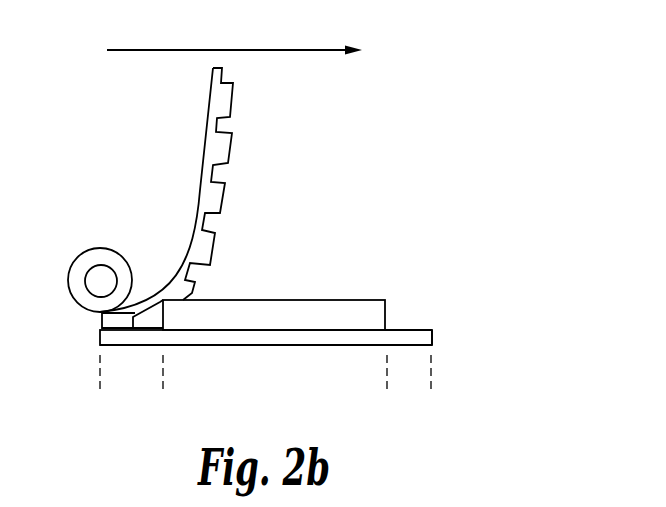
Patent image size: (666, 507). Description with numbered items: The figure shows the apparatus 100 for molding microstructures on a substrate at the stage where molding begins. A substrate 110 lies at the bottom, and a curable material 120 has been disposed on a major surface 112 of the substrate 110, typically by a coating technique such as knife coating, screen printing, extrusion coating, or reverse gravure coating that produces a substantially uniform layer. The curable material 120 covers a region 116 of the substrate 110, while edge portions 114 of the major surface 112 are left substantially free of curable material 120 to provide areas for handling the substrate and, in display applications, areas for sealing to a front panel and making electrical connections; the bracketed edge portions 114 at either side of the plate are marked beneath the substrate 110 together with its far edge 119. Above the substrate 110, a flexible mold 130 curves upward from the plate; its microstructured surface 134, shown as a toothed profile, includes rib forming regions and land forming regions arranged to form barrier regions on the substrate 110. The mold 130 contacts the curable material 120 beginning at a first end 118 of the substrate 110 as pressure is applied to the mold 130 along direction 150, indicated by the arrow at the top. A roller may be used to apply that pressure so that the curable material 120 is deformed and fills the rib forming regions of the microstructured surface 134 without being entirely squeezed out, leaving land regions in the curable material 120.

The apparatus 100 is at (345, 140).
The substrate 110 is at (225, 345).
The major surface 112 is at (408, 330).
The edge portions 114 is at (132, 377).
The region 116 is at (283, 378).
The first end 118 is at (100, 339).
The edge of base plate 119 is at (436, 340).
The curable material 120 is at (304, 292).
The flexible mold 130 is at (197, 167).
The microstructured surface 134 is at (240, 157).
The direction 150 is at (170, 47).